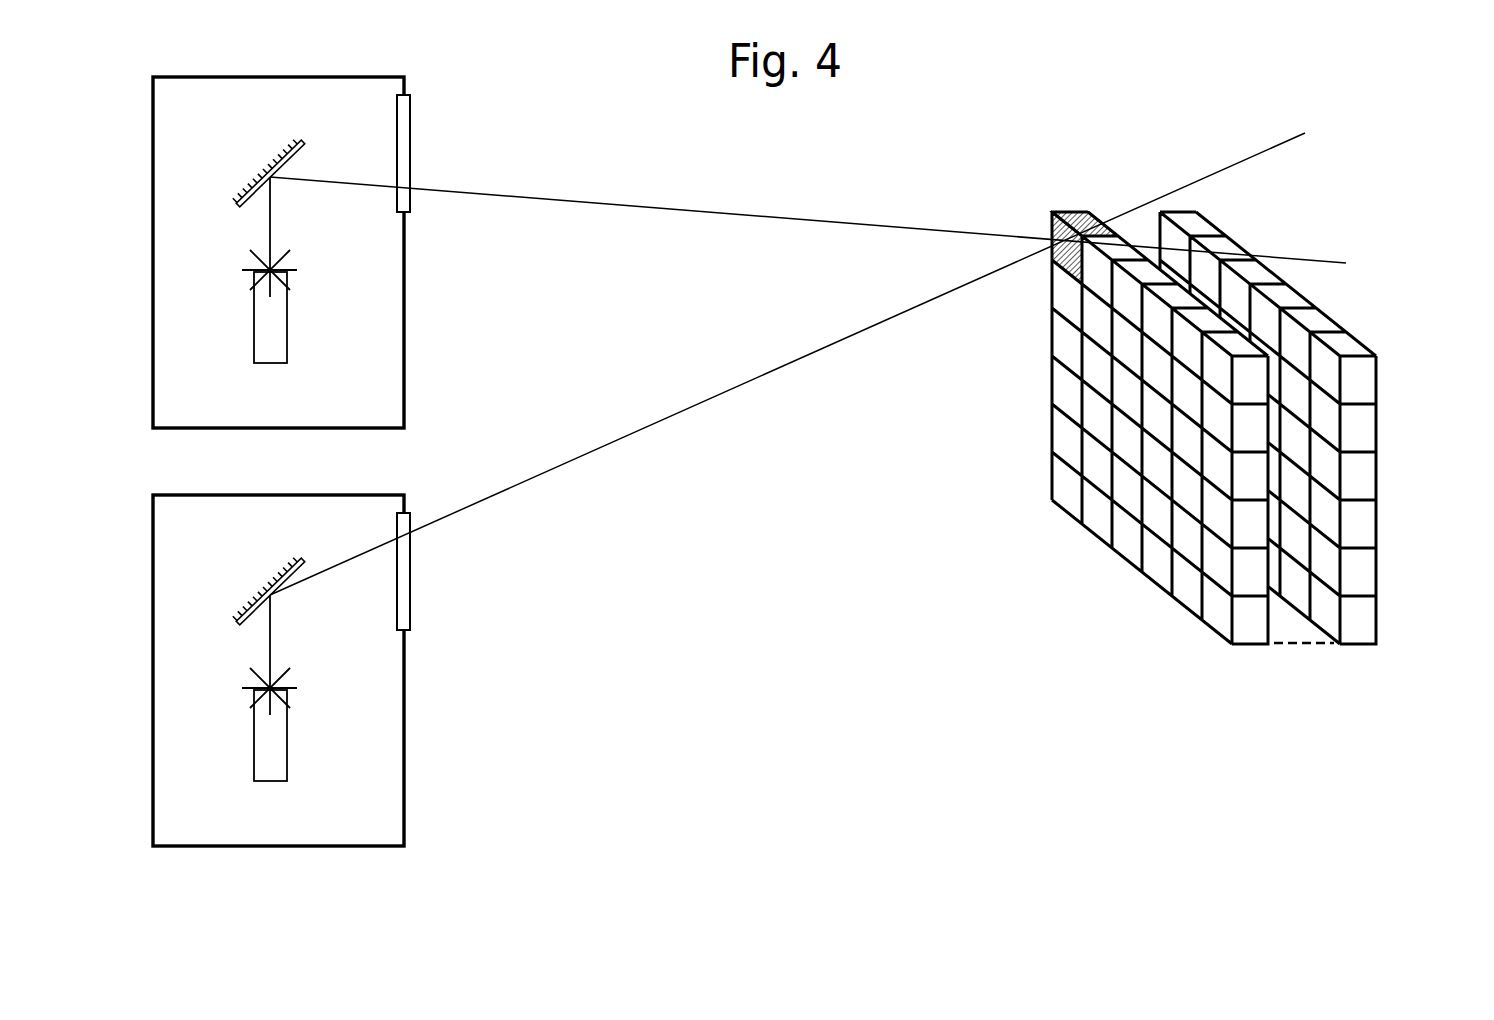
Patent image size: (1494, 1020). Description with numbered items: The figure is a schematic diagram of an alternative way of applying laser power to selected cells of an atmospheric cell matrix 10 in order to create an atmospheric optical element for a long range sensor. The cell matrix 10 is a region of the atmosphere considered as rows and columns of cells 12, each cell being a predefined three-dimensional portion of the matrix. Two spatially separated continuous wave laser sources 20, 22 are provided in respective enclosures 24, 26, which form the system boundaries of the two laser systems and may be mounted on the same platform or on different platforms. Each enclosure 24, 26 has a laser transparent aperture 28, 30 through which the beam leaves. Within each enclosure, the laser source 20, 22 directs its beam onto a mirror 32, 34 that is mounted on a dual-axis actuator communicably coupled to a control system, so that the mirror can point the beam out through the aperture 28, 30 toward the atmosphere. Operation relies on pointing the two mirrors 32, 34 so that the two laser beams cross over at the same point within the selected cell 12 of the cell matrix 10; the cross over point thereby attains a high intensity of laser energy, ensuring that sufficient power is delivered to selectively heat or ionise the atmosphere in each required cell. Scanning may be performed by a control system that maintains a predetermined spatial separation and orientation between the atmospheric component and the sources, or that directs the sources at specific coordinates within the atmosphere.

The cell matrix 10 is at (1374, 329).
The cell 12 is at (1068, 262).
The CW laser source 20 is at (277, 326).
The CW laser source 22 is at (277, 744).
The enclosure 24 is at (405, 341).
The enclosure 26 is at (405, 759).
The laser transparent aperture 28 is at (411, 198).
The laser transparent aperture 30 is at (411, 567).
The mirror 32 is at (241, 203).
The mirror 34 is at (241, 621).